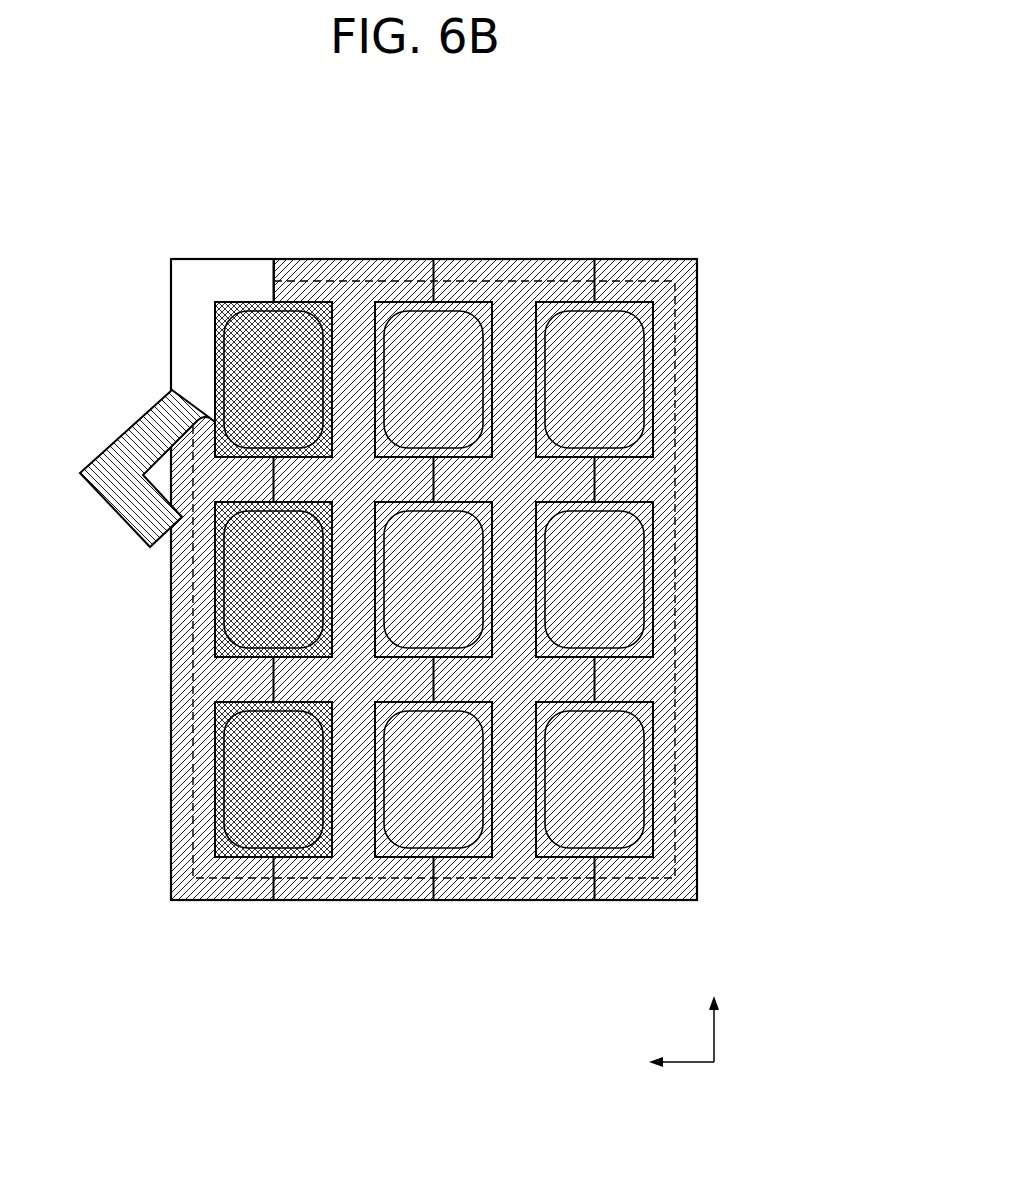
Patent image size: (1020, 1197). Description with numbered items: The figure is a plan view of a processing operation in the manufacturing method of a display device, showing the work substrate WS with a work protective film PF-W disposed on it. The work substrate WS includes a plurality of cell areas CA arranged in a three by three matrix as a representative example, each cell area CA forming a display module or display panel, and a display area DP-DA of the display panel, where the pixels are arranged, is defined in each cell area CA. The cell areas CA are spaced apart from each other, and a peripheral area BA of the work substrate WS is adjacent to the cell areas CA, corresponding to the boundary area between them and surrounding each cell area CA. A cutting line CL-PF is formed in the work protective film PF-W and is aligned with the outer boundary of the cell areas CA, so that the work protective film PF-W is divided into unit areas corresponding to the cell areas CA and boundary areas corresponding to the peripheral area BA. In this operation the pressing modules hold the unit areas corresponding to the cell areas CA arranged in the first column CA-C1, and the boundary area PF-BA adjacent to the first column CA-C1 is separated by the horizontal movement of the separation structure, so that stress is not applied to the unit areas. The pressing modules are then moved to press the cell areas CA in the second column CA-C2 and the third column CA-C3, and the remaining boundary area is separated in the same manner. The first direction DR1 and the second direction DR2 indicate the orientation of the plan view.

The work substrate WS is at (377, 187).
The cell area CA is at (291, 300).
The peripheral area BA is at (352, 308).
The cutting line CL-PF is at (425, 276).
The boundary area PF-BA is at (118, 453).
The work protective film PF-W is at (685, 470).
The display area DP-DA is at (223, 569).
The first column CA-C1 is at (299, 862).
The second column CA-C2 is at (461, 862).
The third column CA-C3 is at (621, 862).
The first direction DR1 is at (713, 1017).
The second direction DR2 is at (659, 1063).